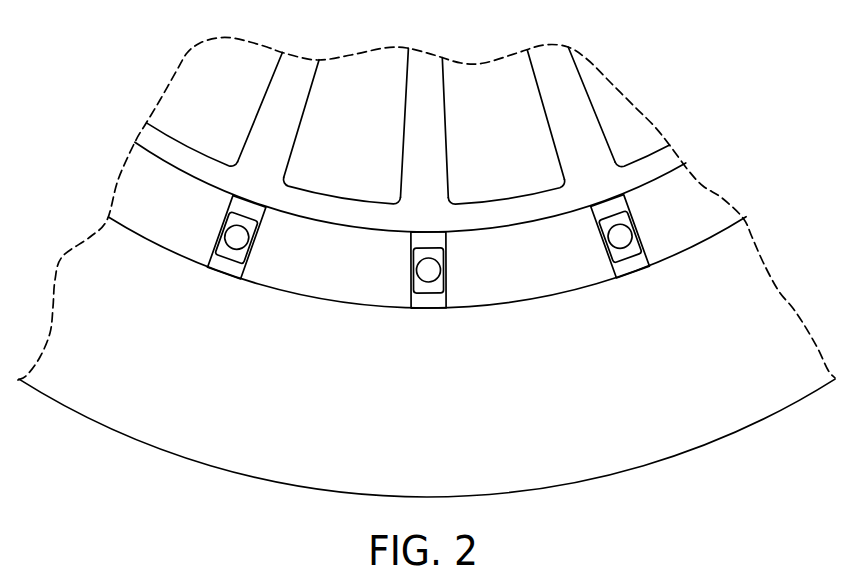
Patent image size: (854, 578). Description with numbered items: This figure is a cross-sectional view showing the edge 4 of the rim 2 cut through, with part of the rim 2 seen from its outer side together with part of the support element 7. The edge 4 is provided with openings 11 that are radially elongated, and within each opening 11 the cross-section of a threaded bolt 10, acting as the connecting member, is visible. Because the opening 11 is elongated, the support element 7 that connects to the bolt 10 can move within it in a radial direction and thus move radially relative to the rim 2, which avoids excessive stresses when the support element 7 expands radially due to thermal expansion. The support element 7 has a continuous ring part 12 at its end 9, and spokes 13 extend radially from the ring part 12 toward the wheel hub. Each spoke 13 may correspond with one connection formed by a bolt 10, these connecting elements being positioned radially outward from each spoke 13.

The rim 2 is at (775, 305).
The edge 4 is at (688, 170).
The support element 7 is at (632, 246).
The end 9 is at (672, 152).
The threaded bolt 10 is at (230, 240).
The opening 11 is at (623, 215).
The ring part 12 is at (143, 137).
The spoke 13 is at (421, 62).